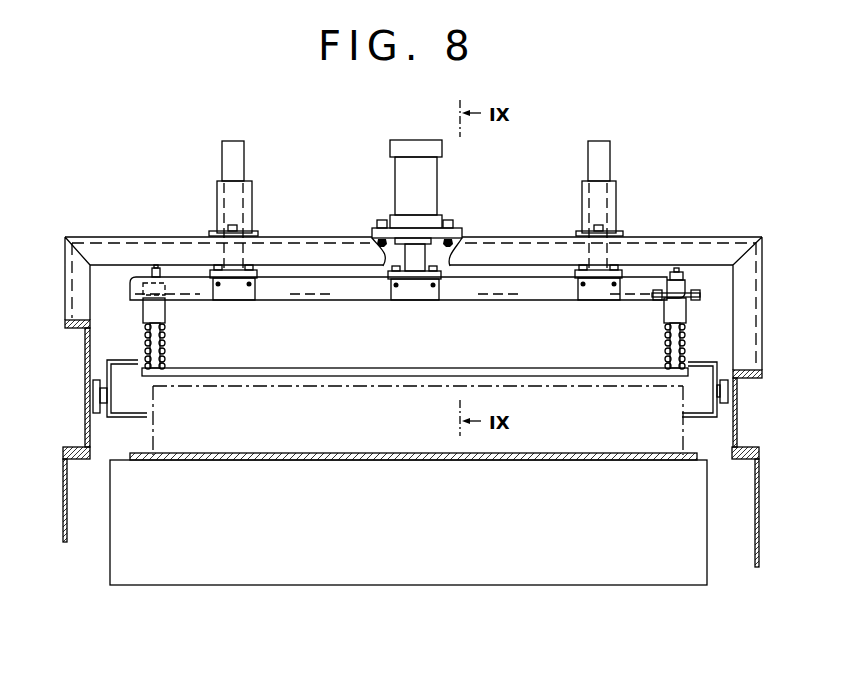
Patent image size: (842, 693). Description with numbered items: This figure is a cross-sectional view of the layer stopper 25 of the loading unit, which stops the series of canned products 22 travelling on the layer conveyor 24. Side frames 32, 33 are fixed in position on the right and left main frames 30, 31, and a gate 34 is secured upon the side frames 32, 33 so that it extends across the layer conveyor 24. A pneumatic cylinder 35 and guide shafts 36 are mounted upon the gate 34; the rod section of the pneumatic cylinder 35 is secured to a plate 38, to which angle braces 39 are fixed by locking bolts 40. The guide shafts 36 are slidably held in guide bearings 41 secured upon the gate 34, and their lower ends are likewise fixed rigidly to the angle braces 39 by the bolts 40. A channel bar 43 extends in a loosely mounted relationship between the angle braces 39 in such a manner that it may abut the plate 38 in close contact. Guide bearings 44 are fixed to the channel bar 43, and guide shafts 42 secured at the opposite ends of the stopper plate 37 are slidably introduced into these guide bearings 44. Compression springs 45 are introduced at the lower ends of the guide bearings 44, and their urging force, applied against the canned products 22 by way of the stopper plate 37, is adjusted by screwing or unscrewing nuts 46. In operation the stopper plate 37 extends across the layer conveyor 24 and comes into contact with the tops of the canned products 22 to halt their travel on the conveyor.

The canned products 22 is at (677, 453).
The layer conveyor 24 is at (142, 462).
The layer stopper 25 is at (190, 185).
The left main frame 30 is at (63, 470).
The right main frame 31 is at (762, 523).
The side frame 32 is at (85, 347).
The side frame 33 is at (738, 444).
The gate 34 is at (74, 281).
The pneumatic cylinder 35 is at (400, 180).
The guide shafts 36 is at (228, 163).
The stopper plate 37 is at (383, 368).
The plate 38 is at (378, 262).
The angle braces 39 is at (245, 300).
The locking bolts 40 is at (253, 272).
The guide bearings 41 is at (228, 207).
The guide shafts 42 is at (160, 345).
The channel bar 43 is at (352, 300).
The guide bearings 44 is at (167, 313).
The compression springs 45 is at (166, 360).
The nuts 46 is at (143, 278).